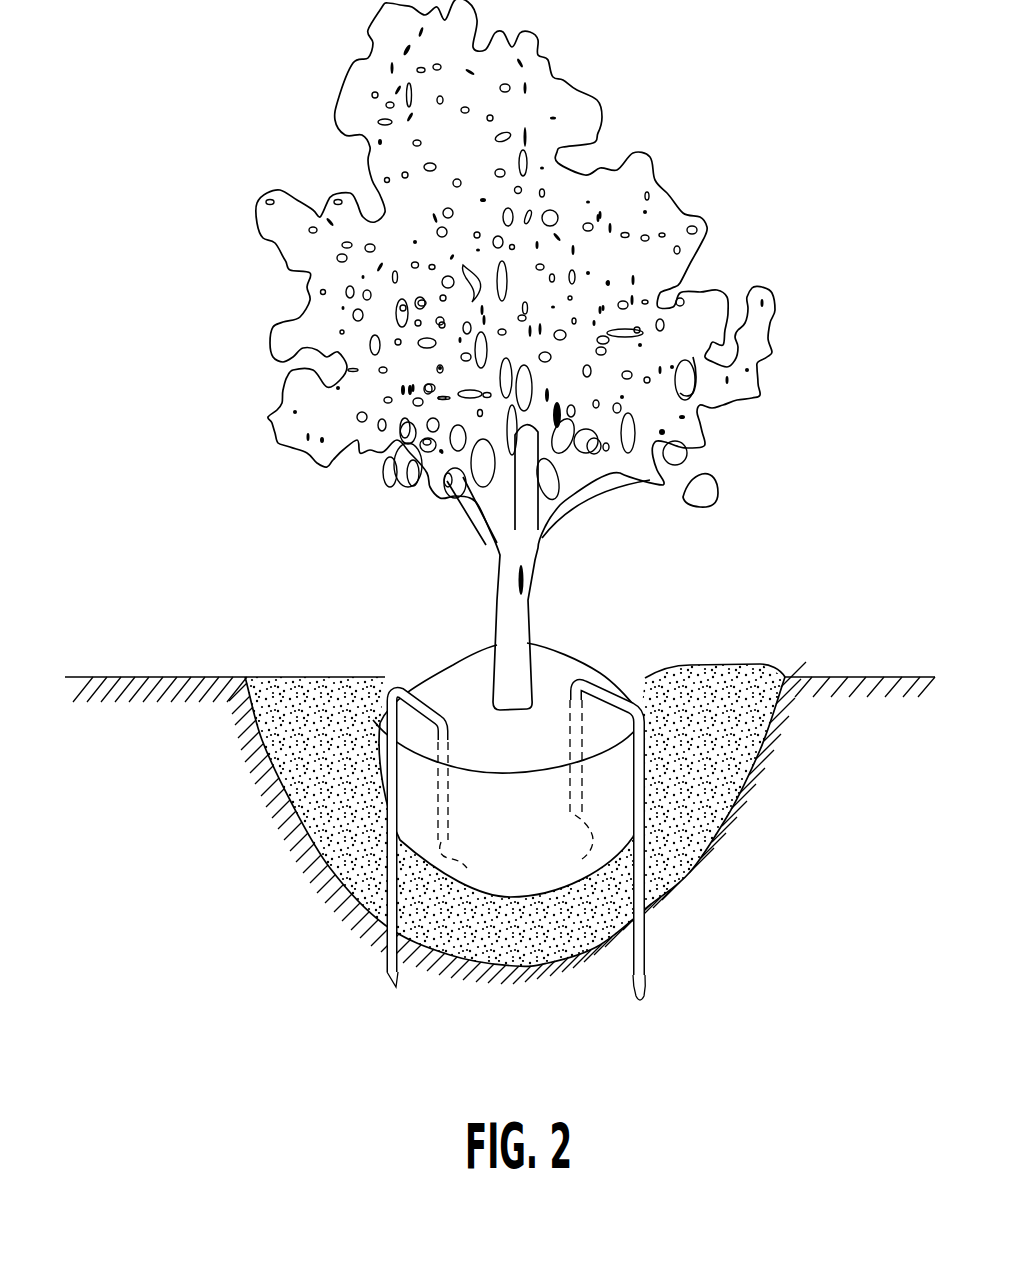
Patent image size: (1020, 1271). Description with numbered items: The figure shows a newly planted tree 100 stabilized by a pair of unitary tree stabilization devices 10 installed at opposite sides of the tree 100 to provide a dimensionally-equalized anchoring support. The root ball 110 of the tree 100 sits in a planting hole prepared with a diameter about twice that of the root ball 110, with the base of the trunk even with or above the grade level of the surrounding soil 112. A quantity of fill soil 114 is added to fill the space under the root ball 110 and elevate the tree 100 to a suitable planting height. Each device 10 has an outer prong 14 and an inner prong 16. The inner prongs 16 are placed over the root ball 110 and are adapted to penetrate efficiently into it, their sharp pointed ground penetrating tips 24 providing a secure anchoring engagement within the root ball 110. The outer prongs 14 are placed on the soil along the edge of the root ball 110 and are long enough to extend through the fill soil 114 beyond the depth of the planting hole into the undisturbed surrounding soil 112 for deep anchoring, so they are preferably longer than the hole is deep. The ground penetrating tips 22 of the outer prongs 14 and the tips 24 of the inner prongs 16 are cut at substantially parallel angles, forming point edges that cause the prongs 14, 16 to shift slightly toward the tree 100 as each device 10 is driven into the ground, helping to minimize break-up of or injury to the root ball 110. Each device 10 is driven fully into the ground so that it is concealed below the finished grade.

The unitary tree stabilization device 10 is at (467, 800).
The outer prong 14 is at (388, 877).
The inner prong 16 is at (568, 735).
The ground penetrating tip 22 is at (390, 970).
The ground penetrating tip 24 is at (516, 850).
The tree 100 is at (527, 560).
The root ball 110 is at (490, 680).
The surrounding soil 112 is at (118, 710).
The fill soil 114 is at (702, 697).